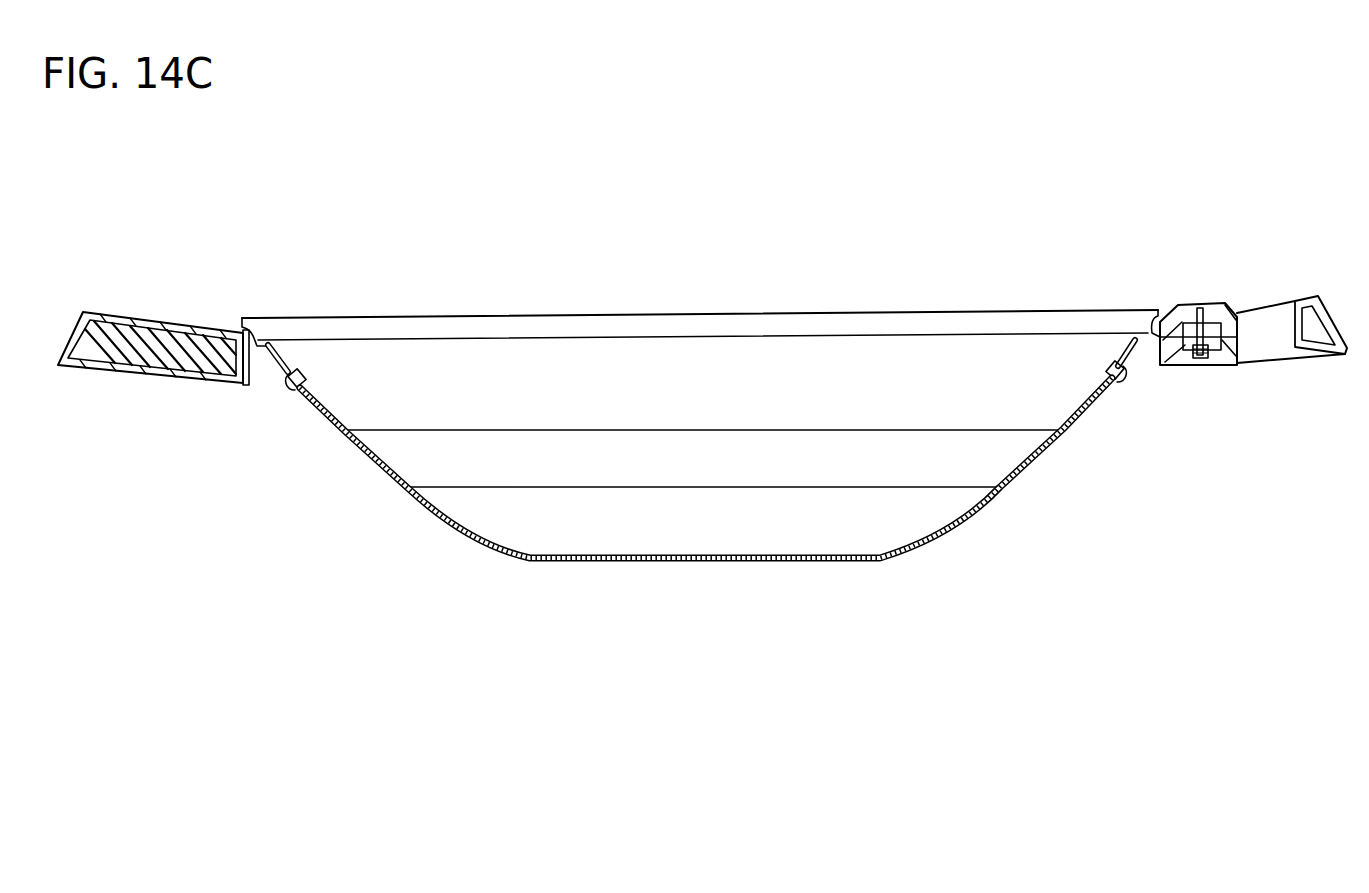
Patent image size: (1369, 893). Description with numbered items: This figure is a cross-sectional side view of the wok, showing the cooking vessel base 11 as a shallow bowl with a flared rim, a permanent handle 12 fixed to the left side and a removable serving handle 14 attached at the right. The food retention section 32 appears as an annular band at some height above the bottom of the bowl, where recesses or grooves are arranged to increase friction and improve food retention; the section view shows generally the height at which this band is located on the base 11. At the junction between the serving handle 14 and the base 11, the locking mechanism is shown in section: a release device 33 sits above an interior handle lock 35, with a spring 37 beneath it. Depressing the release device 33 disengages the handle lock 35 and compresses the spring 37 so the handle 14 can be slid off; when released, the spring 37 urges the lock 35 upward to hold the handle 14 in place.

The cooking vessel base 11 is at (350, 447).
The permanent handle 12 is at (140, 373).
The serving handle 14 is at (1270, 350).
The food retention section 32 is at (578, 453).
The release device 33 is at (1210, 310).
The interior handle lock 35 is at (1200, 308).
The spring 37 is at (1208, 357).